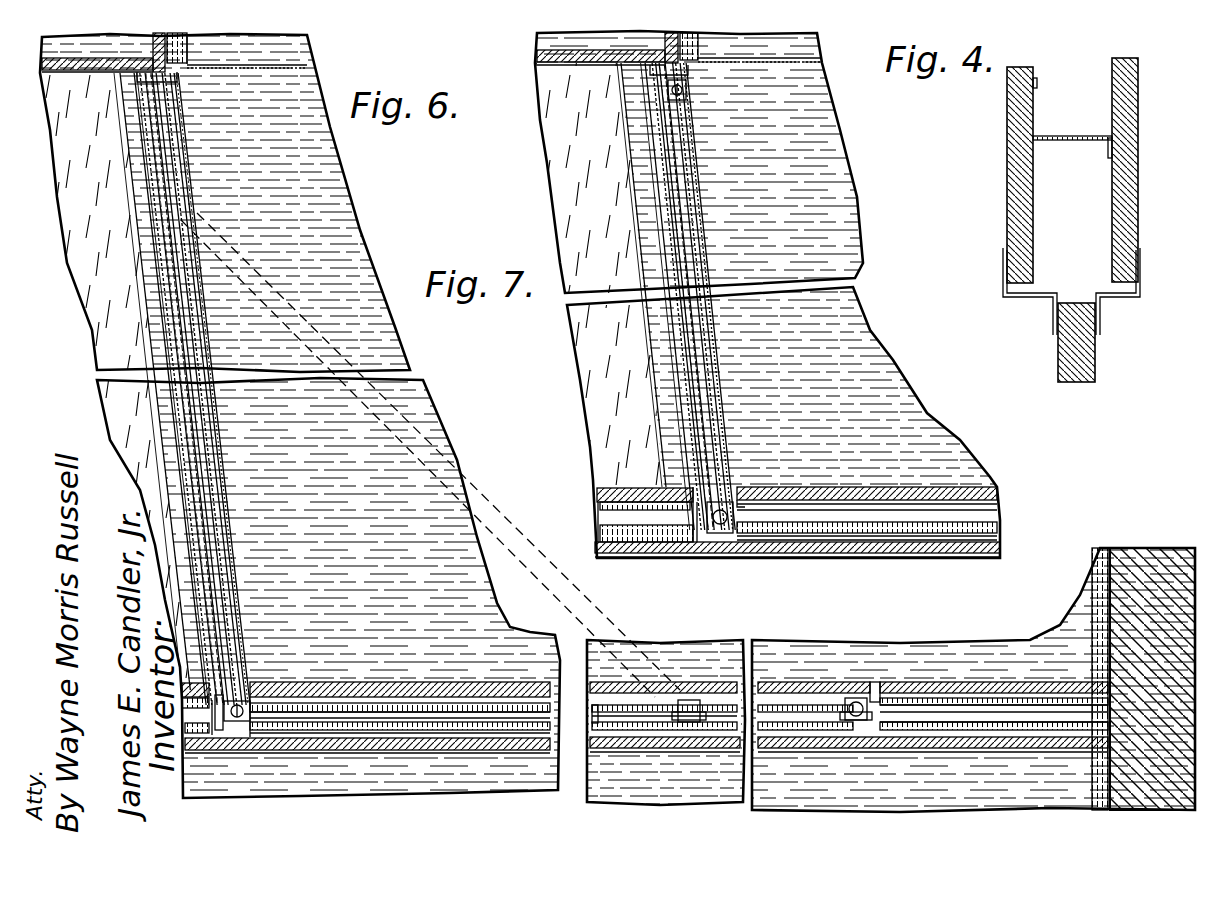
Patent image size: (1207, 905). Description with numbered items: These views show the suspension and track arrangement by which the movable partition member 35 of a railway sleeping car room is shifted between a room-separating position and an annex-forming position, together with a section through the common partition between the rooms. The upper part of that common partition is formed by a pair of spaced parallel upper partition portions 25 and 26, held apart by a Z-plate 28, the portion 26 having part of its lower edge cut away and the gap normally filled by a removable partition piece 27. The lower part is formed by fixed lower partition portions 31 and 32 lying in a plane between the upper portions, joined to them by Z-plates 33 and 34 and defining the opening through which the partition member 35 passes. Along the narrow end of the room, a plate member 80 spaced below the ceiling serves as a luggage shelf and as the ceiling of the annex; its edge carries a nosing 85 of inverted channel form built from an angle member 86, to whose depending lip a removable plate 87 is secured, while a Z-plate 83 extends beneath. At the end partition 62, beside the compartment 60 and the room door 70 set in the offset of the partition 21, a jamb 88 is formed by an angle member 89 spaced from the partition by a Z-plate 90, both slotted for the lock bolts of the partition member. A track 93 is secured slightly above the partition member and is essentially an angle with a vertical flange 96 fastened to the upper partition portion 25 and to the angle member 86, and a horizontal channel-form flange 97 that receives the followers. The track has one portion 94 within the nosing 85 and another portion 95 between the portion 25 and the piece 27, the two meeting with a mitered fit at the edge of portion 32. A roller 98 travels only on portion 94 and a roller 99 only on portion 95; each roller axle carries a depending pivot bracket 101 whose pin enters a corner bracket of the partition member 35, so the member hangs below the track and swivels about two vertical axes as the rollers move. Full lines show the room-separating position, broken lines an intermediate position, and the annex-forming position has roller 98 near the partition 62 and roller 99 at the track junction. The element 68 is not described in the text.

In FIG. 6, the partition 21 is at (74, 72).
In FIG. 7, the partition 21 is at (569, 69).
In FIG. 6, the upper partition portion 25 is at (369, 750).
In FIG. 7, the upper partition portion 25 is at (840, 553).
In FIG. 4, the upper partition portion 25 is at (1007, 158).
In FIG. 6, the upper partition portion 26 is at (194, 686).
In FIG. 7, the upper partition portion 26 is at (608, 487).
In FIG. 4, the upper partition portion 26 is at (1138, 120).
In FIG. 6, the removable partition piece 27 is at (800, 690).
In FIG. 7, the removable partition piece 27 is at (832, 487).
In FIG. 4, the Z-plate 28 is at (1068, 136).
In FIG. 6, the lower partition portion 31 is at (966, 712).
In FIG. 4, the lower partition portion 31 is at (1066, 362).
In FIG. 6, the lower partition portion 32 is at (217, 712).
In FIG. 7, the lower partition portion 32 is at (650, 520).
In FIG. 6, the Z-plate 33 is at (196, 733).
In FIG. 7, the Z-plate 33 is at (653, 543).
In FIG. 4, the Z-plate 33 is at (1018, 297).
In FIG. 6, the Z-plate 34 is at (206, 696).
In FIG. 7, the Z-plate 34 is at (628, 487).
In FIG. 4, the Z-plate 34 is at (1122, 297).
In FIG. 6, the partition member 35 is at (306, 326).
In FIG. 7, the partition member 35 is at (710, 368).
In FIG. 6, the compartment 60 is at (297, 75).
In FIG. 7, the compartment 60 is at (803, 68).
In FIG. 6, the end partition 62 is at (243, 70).
In FIG. 7, the panel edge member 68 is at (752, 60).
In FIG. 6, the room door 70 is at (1132, 562).
In FIG. 6, the plate member 80 is at (98, 195).
In FIG. 7, the plate member 80 is at (635, 404).
In FIG. 6, the Z-plate 83 is at (173, 428).
In FIG. 7, the Z-plate 83 is at (652, 178).
In FIG. 6, the nosing 85 is at (221, 348).
In FIG. 7, the nosing 85 is at (728, 348).
In FIG. 6, the angle member 86 is at (177, 398).
In FIG. 7, the angle member 86 is at (668, 170).
In FIG. 6, the removable plate 87 is at (227, 448).
In FIG. 7, the removable plate 87 is at (706, 236).
In FIG. 6, the jamb 88 is at (136, 222).
In FIG. 7, the jamb 88 is at (657, 350).
In FIG. 6, the angle member 89 is at (246, 70).
In FIG. 7, the angle member 89 is at (692, 84).
In FIG. 6, the Z-plate 90 is at (142, 76).
In FIG. 7, the Z-plate 90 is at (642, 68).
In FIG. 6, the track 93 is at (232, 578).
In FIG. 7, the track 93 is at (795, 506).
In FIG. 6, the track portion 94 is at (207, 527).
In FIG. 7, the track portion 94 is at (700, 410).
In FIG. 6, the track portion 95 is at (483, 728).
In FIG. 7, the track portion 95 is at (886, 515).
In FIG. 6, the flange 96 is at (152, 177).
In FIG. 7, the flange 96 is at (930, 548).
In FIG. 6, the flange 97 is at (170, 167).
In FIG. 7, the flange 97 is at (890, 530).
In FIG. 6, the roller 98 is at (237, 700).
In FIG. 7, the roller 98 is at (668, 92).
In FIG. 6, the roller 99 is at (852, 730).
In FIG. 7, the roller 99 is at (724, 535).
In FIG. 6, the pivot bracket 101 is at (247, 706).
In FIG. 7, the pivot bracket 101 is at (688, 95).